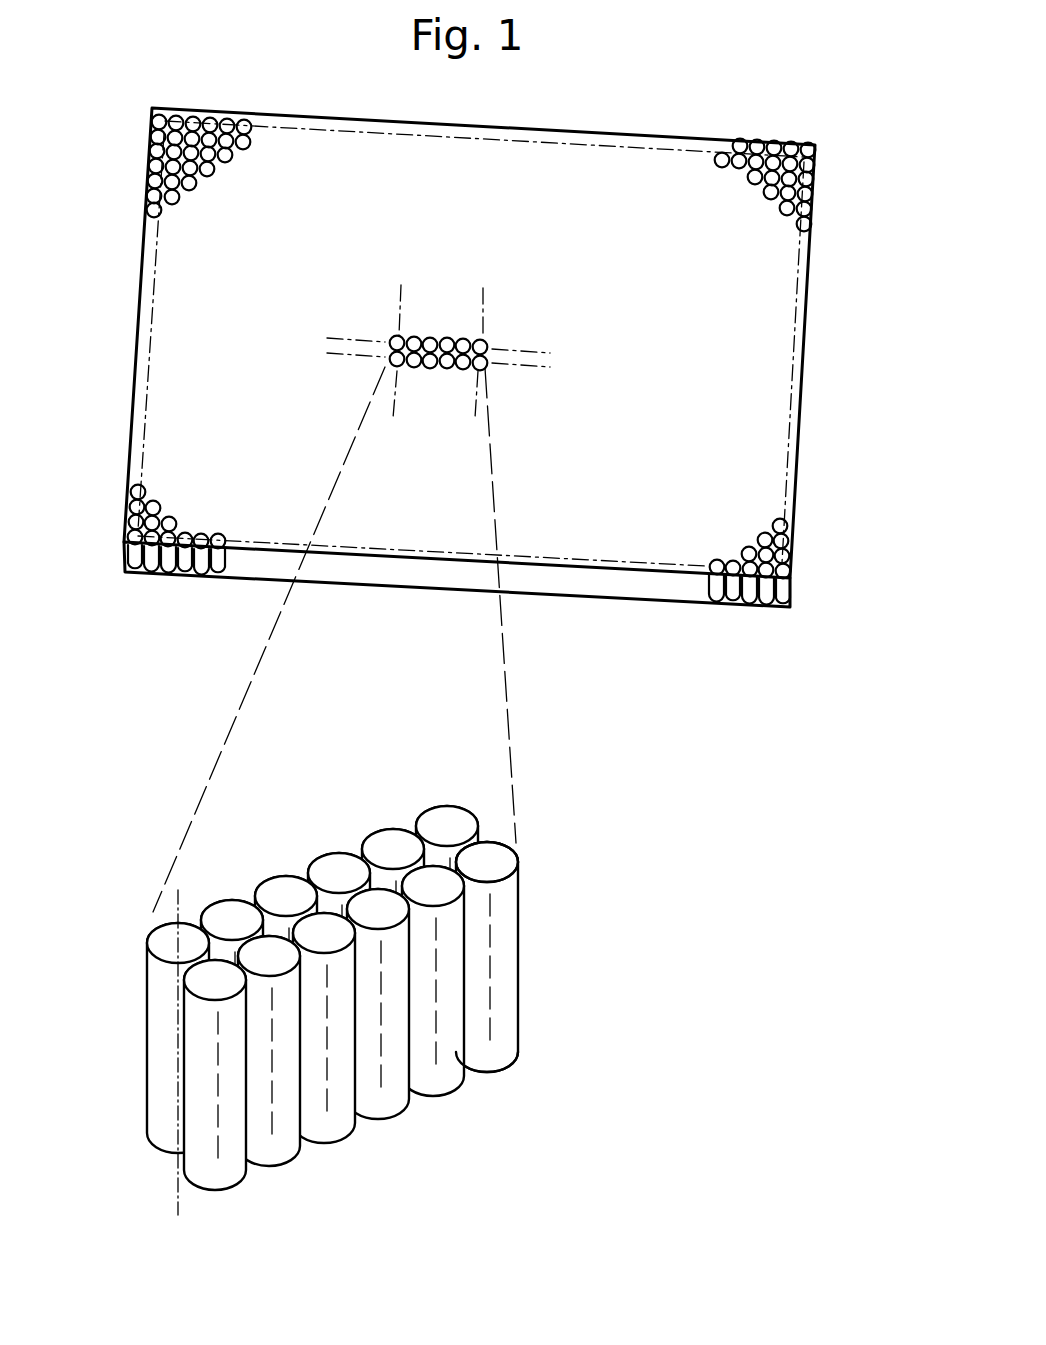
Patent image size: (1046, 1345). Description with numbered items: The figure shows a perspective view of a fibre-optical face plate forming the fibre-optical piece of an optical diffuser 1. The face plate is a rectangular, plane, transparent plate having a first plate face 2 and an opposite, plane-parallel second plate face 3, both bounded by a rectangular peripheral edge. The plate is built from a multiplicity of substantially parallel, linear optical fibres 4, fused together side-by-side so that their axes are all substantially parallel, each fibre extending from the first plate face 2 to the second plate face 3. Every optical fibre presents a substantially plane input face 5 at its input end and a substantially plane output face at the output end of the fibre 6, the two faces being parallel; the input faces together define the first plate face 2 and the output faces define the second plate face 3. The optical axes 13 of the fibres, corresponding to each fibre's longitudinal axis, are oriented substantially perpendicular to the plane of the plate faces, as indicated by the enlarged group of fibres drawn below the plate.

The optical diffuser 1 is at (641, 119).
The first plate face 2 is at (762, 348).
The second plate face 3 is at (617, 609).
The optical fibres 4 is at (152, 142).
The input face 5 is at (497, 862).
The output end of the fibre 6 is at (506, 1081).
The optical axes 13 is at (178, 1200).